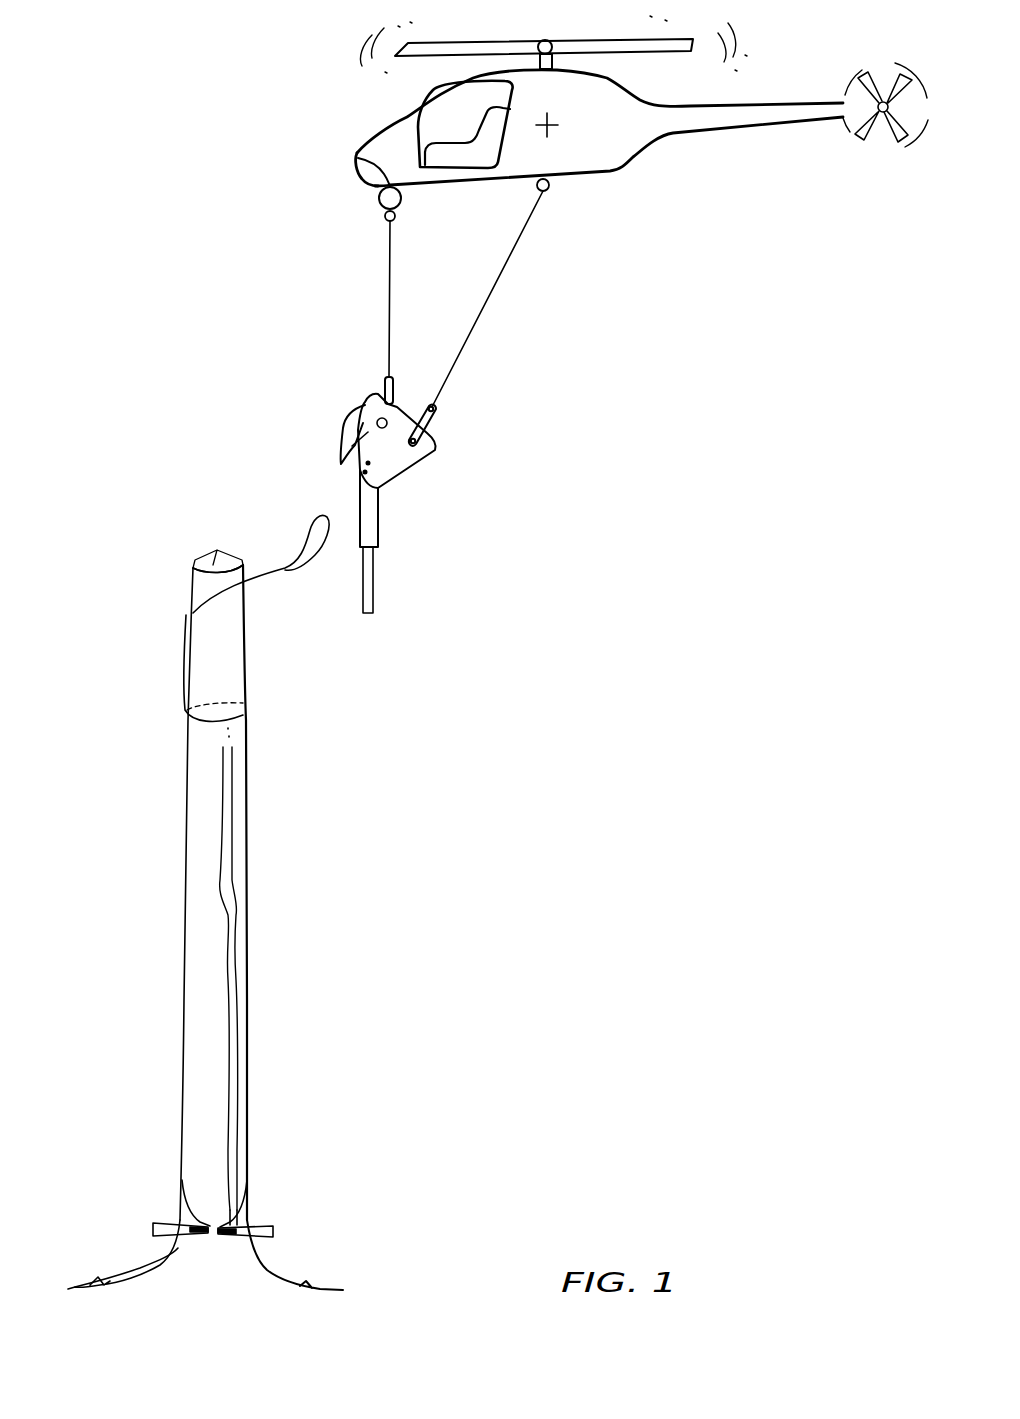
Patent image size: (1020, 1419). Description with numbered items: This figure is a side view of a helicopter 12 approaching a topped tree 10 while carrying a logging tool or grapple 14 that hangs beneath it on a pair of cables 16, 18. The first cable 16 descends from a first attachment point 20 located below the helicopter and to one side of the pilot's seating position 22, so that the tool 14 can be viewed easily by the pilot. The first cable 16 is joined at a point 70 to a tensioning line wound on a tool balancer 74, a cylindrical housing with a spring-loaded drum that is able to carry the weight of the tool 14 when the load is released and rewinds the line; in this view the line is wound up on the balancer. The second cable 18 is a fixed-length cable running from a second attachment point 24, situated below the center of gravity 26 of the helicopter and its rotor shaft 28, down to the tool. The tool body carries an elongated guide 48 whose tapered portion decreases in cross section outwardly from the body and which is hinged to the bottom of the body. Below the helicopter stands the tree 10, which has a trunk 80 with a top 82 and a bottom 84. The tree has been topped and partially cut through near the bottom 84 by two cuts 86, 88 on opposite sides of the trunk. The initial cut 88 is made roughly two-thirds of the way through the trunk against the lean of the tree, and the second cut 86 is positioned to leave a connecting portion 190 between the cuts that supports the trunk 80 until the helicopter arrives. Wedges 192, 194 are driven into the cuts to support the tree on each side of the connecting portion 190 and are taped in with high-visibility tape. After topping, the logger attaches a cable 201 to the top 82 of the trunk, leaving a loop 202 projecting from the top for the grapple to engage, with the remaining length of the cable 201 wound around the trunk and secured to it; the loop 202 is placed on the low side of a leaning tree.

The tree 10 is at (290, 868).
The helicopter 12 is at (686, 152).
The tool or grapple 14 is at (415, 470).
The first cable 16 is at (388, 296).
The second cable 18 is at (483, 315).
The first attachment point 20 is at (358, 157).
The pilot's seating position 22 is at (445, 135).
The second attachment point 24 is at (549, 190).
The center of gravity 26 is at (549, 127).
The rotor shaft 28 is at (553, 61).
The elongated guide 48 is at (378, 527).
The connection point 70 is at (396, 217).
The tool balancer 74 is at (380, 205).
The trunk 80 is at (218, 792).
The top 82 is at (210, 558).
The bottom 84 is at (193, 1257).
The second cut 86 is at (206, 1222).
The first cut 88 is at (240, 1225).
The connecting portion 190 is at (218, 1222).
The wedges 192 is at (152, 1228).
The wedges 194 is at (276, 1233).
The cable 201 is at (184, 661).
The loop 202 is at (307, 522).